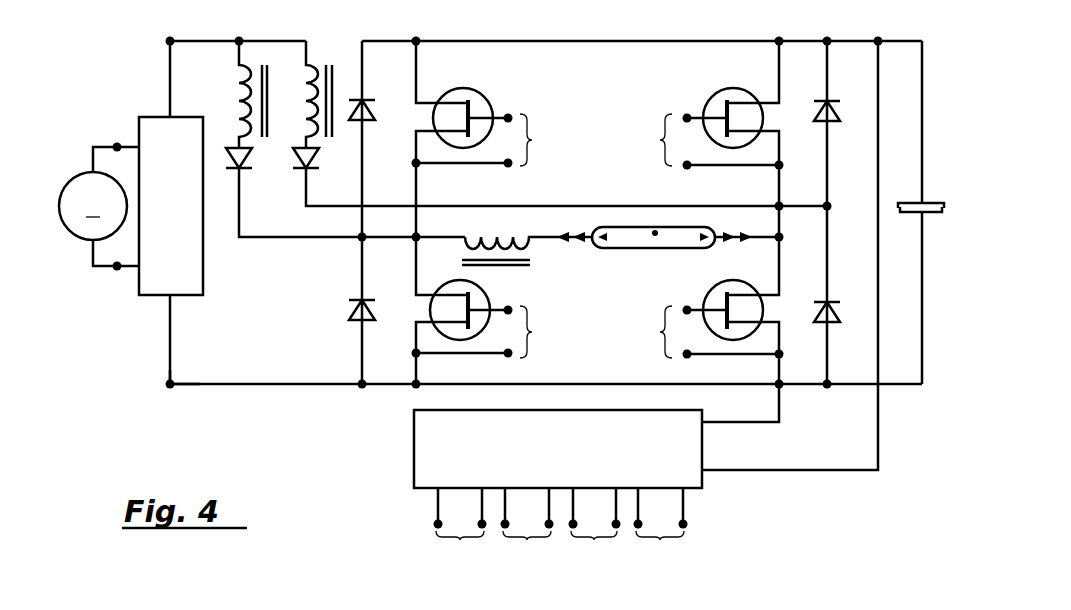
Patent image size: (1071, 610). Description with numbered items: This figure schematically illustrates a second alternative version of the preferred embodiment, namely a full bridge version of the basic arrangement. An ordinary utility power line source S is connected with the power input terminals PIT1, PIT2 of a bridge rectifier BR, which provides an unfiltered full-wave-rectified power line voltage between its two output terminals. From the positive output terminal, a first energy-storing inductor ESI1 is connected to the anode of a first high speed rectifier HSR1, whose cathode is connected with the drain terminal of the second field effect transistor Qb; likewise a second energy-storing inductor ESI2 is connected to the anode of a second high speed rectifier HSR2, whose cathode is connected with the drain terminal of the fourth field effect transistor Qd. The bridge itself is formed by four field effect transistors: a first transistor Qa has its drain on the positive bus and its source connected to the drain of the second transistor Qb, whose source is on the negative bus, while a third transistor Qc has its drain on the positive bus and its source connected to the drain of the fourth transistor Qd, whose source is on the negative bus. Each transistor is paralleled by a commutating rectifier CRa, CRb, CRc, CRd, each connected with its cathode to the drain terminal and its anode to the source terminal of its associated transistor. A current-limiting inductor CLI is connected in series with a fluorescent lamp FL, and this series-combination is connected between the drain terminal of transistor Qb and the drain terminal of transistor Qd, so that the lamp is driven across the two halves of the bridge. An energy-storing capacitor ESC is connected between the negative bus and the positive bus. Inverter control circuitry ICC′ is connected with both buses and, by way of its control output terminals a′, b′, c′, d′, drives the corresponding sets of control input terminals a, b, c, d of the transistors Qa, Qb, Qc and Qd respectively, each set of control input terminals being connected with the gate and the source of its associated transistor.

The source S is at (93, 206).
The power input terminal PIT1 is at (117, 145).
The power input terminal PIT2 is at (117, 268).
The bridge rectifier BR is at (150, 296).
The first energy-storing inductor ESI1 is at (266, 78).
The second energy-storing inductor ESI2 is at (334, 75).
The first high speed rectifier HSR1 is at (236, 170).
The second high speed rectifier HSR2 is at (300, 172).
The commutating rectifier CRa is at (376, 108).
The commutating rectifier CRb is at (353, 312).
The commutating rectifier CRc is at (842, 112).
The commutating rectifier CRd is at (842, 315).
The first field effect transistor Qa is at (472, 91).
The second field effect transistor Qb is at (483, 299).
The third field effect transistor Qc is at (723, 92).
The fourth field effect transistor Qd is at (716, 292).
The control input terminals a is at (480, 141).
The control input terminals b is at (480, 332).
The control input terminals c is at (715, 142).
The control input terminals d is at (715, 332).
The current-limiting inductor CLI is at (532, 264).
The fluorescent lamp FL is at (648, 249).
The energy-storing capacitor ESC is at (898, 205).
The inverter control circuitry ICC′ is at (414, 432).
The control output terminals a′ is at (460, 526).
The control output terminals b′ is at (527, 526).
The control output terminals c′ is at (595, 526).
The control output terminals d′ is at (661, 526).